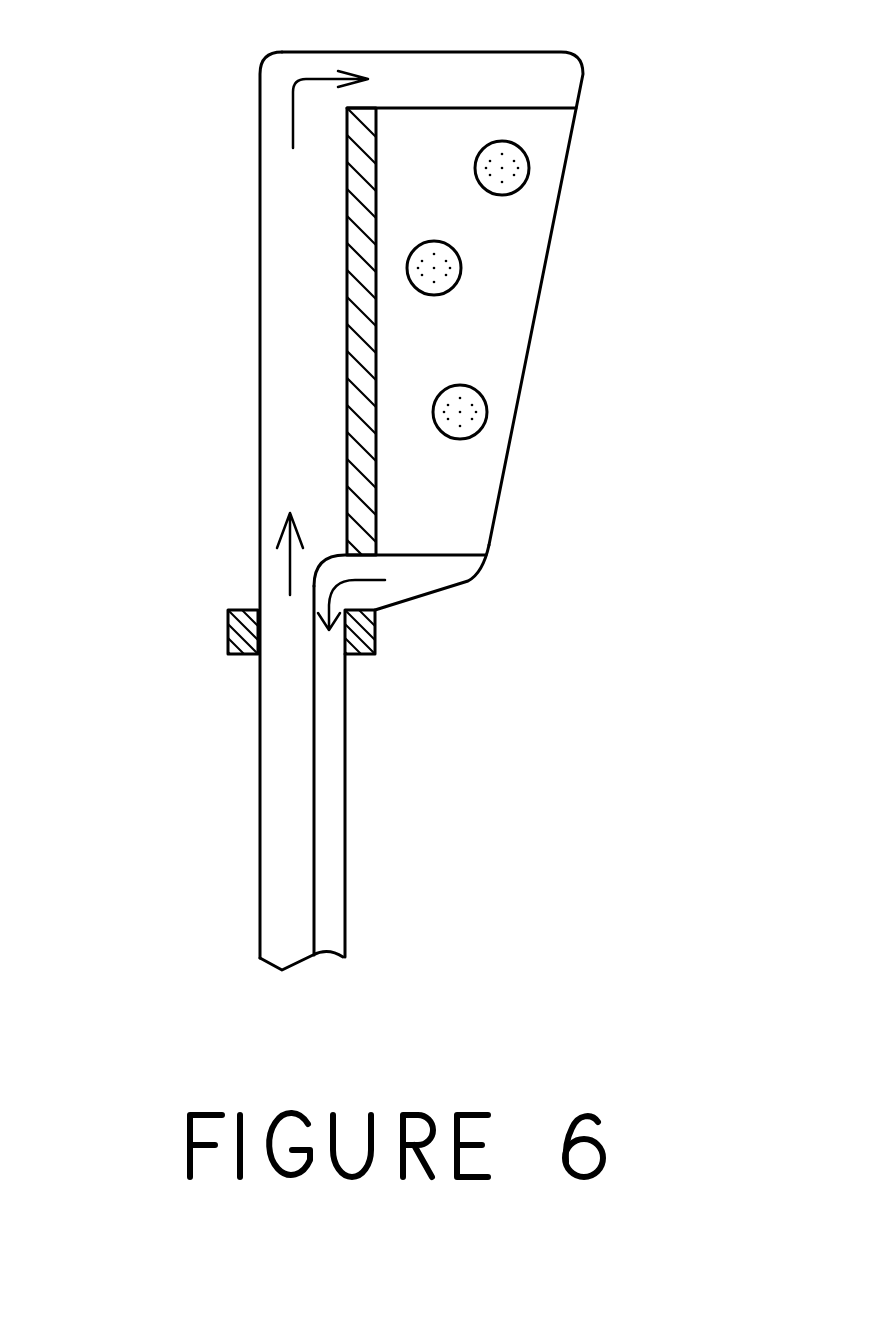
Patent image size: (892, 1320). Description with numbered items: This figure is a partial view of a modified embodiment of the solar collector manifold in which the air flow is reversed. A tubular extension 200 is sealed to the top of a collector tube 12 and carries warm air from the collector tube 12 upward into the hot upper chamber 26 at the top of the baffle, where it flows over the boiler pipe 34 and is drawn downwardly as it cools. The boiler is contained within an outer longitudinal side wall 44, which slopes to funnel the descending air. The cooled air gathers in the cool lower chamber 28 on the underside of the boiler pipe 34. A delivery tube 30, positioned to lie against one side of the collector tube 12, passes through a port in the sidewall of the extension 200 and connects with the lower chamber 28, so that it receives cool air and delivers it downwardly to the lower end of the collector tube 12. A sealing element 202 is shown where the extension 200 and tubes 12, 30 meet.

The collector tube 12 is at (258, 840).
The hot upper chamber 26 is at (498, 87).
The cool lower chamber 28 is at (413, 578).
The delivery tube 30 is at (327, 882).
The boiler pipe 34 is at (465, 410).
The outer longitudinal side wall 44 is at (376, 347).
The tubular extension 200 is at (260, 319).
The seal ring 202 is at (228, 632).